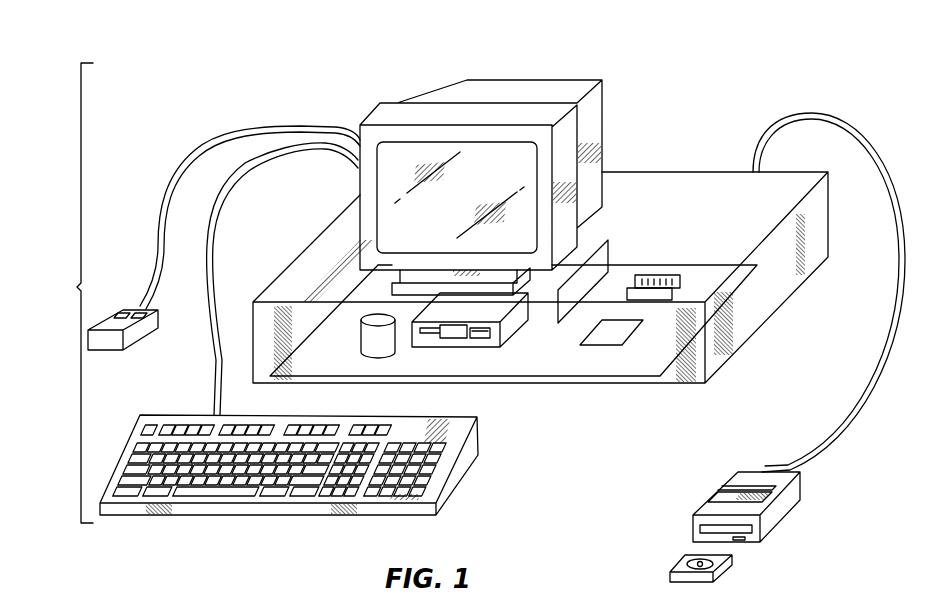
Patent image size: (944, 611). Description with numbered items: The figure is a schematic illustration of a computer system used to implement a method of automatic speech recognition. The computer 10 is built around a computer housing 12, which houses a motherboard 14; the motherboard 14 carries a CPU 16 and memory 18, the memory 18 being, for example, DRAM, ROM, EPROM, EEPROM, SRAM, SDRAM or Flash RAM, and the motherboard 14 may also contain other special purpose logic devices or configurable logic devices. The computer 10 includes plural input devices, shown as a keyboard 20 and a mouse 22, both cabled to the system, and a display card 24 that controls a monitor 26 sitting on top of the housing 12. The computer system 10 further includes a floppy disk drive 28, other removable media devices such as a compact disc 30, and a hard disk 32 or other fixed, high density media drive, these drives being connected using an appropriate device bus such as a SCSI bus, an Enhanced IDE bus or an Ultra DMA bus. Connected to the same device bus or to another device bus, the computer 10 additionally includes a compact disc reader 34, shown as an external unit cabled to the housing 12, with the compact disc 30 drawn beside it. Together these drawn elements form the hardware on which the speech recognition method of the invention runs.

The computer 10 is at (50, 293).
The computer housing 12 is at (692, 182).
The motherboard 14 is at (721, 262).
The CPU 16 is at (630, 327).
The memory 18 is at (676, 271).
The keyboard 20 is at (470, 452).
The mouse 22 is at (128, 342).
The display card 24 is at (605, 258).
The monitor 26 is at (508, 78).
The floppy disk drive 28 is at (500, 338).
The compact disc 30 is at (722, 560).
The hard disk 32 is at (372, 347).
The compact disc reader 34 is at (750, 478).